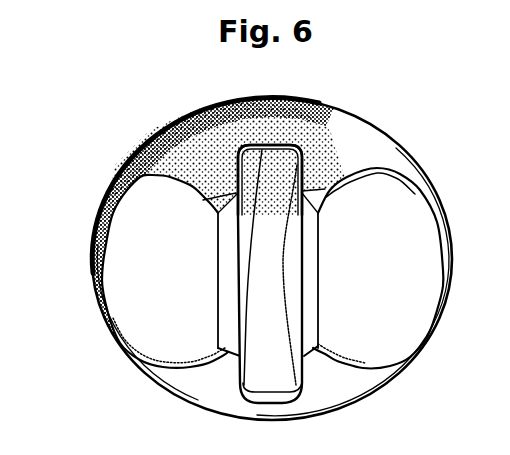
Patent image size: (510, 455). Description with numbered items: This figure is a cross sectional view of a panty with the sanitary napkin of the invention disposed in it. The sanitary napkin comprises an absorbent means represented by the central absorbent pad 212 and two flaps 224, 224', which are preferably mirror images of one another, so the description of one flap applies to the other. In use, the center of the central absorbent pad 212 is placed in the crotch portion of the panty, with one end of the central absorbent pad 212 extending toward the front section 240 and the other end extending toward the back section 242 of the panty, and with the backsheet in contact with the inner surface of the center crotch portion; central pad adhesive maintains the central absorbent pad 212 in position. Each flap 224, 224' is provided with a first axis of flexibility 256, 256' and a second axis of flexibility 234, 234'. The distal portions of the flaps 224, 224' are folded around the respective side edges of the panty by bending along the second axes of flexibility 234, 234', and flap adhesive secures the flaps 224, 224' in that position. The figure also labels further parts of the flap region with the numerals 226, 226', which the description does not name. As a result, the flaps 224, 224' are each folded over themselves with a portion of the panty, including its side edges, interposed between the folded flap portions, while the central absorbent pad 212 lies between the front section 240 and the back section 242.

The central absorbent pad 212 is at (270, 368).
The flap 224 is at (176, 275).
The flap 224' is at (359, 277).
The rib end loop 226 is at (280, 141).
The rib end loop edge 226' is at (328, 151).
The second axis of flexibility 234 is at (184, 274).
The second axis of flexibility 234' is at (348, 274).
The front section 240 is at (312, 413).
The back section 242 is at (167, 129).
The first axis of flexibility 256 is at (202, 267).
The first axis of flexibility 256' is at (338, 275).